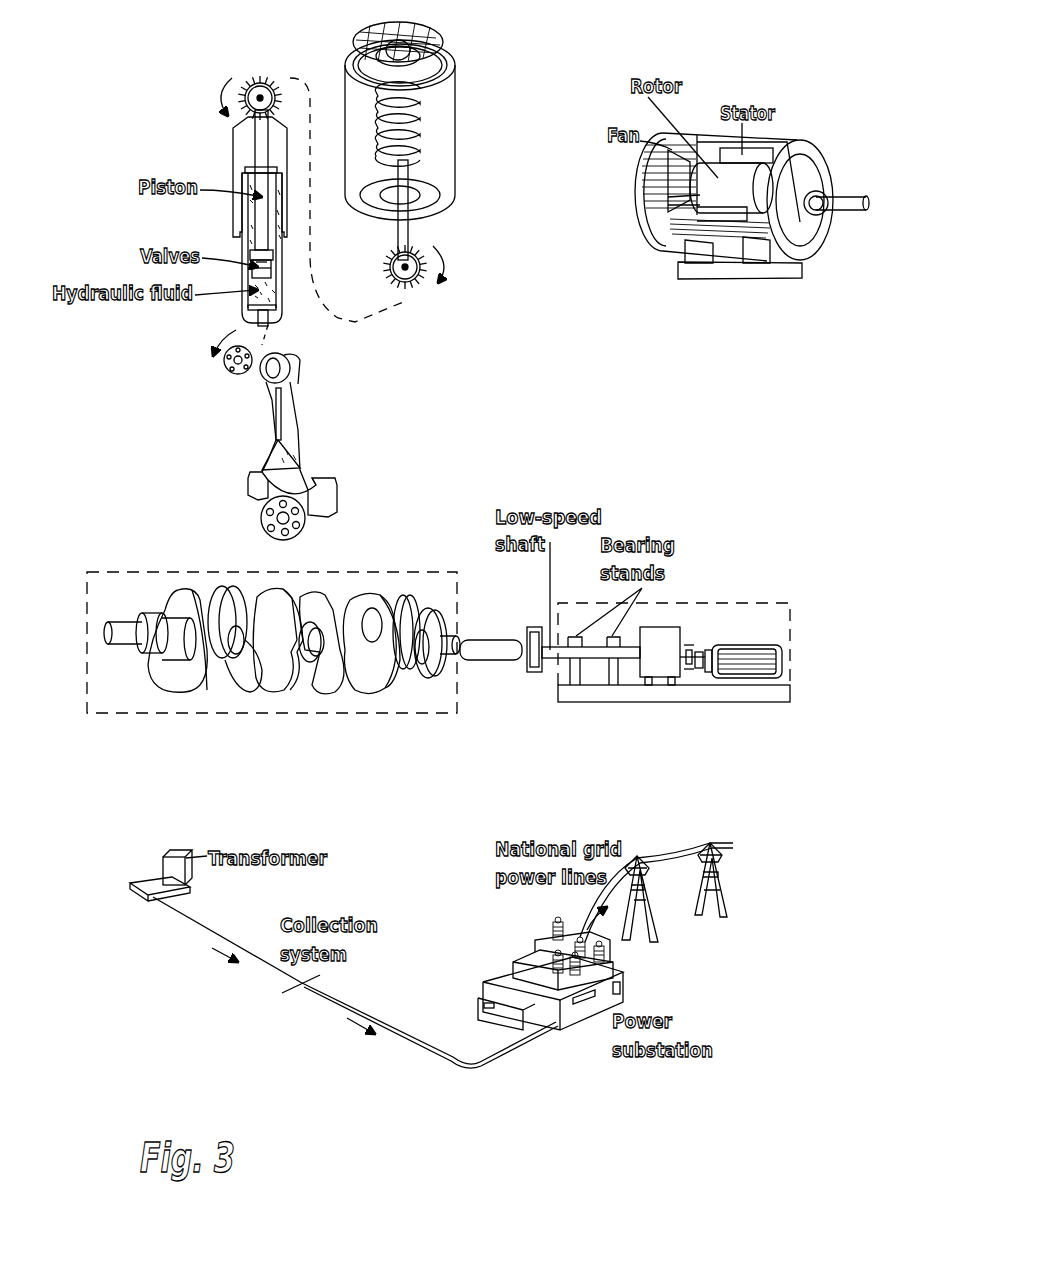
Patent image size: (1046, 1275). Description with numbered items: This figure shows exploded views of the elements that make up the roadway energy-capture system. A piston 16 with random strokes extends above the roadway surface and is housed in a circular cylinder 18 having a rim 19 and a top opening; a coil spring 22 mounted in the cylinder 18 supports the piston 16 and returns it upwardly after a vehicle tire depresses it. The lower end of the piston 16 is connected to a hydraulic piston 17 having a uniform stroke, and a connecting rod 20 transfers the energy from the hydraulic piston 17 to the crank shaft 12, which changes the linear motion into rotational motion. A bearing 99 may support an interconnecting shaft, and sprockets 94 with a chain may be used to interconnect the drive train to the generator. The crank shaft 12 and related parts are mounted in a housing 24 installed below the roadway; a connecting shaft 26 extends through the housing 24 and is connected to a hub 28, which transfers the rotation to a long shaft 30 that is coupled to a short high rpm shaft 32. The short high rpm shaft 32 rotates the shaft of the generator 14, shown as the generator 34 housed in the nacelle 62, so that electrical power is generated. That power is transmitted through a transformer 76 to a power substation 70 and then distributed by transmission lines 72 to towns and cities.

The sprocket 94 is at (258, 80).
The rim 19 is at (352, 68).
The piston 16 is at (440, 40).
The coil spring 22 is at (425, 100).
The cylinder 18 is at (457, 162).
The hydraulic piston 17 is at (243, 215).
The bearing 99 is at (226, 373).
The connecting rod 20 is at (295, 403).
The crank shaft 12 is at (410, 600).
The housing 24 is at (212, 713).
The connecting shaft 26 is at (470, 645).
The hub 28 is at (523, 672).
The long shaft 30 is at (568, 655).
The short high rpm shaft 32 is at (700, 648).
The nacelle 62 is at (760, 606).
The generator 14 is at (645, 702).
The generator 34 is at (655, 236).
The transformer 76 is at (187, 872).
The transmission lines 72 is at (662, 905).
The power substation 70 is at (622, 974).